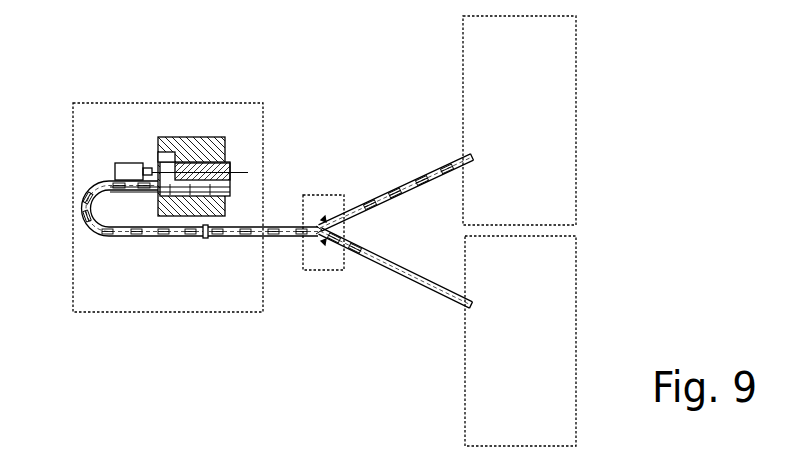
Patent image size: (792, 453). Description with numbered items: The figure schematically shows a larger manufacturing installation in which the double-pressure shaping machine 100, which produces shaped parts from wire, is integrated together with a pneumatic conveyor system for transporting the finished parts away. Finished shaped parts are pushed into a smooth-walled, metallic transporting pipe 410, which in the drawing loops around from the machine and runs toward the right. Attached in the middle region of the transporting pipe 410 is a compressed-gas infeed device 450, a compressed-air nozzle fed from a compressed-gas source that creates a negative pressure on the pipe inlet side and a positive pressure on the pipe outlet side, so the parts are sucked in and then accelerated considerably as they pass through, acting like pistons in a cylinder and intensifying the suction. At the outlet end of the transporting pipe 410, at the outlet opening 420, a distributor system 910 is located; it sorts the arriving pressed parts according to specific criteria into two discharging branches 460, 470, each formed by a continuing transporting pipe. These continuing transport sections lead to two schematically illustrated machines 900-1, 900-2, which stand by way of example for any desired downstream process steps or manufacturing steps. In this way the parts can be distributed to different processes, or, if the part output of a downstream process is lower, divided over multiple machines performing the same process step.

The double-pressure shaping machine 100 is at (286, 93).
The transporting pipe 410 is at (112, 236).
The outlet opening 420 is at (315, 226).
The compressed-gas infeed device 450 is at (205, 238).
The first discharging branch 460 is at (387, 192).
The second discharging branch 470 is at (402, 272).
The distributor system 910 is at (318, 298).
The first downstream machine 900-1 is at (552, 114).
The second downstream machine 900-2 is at (552, 316).